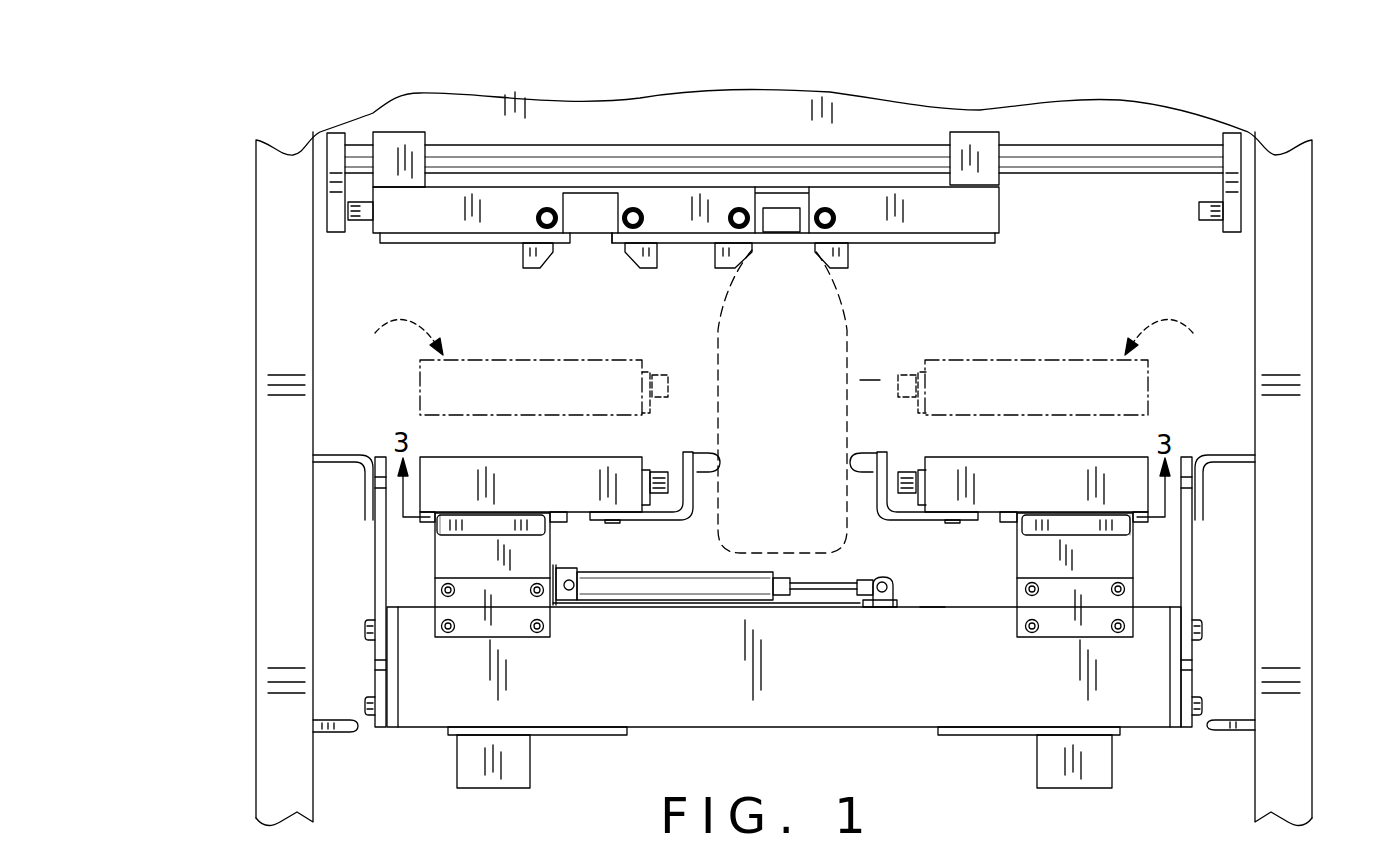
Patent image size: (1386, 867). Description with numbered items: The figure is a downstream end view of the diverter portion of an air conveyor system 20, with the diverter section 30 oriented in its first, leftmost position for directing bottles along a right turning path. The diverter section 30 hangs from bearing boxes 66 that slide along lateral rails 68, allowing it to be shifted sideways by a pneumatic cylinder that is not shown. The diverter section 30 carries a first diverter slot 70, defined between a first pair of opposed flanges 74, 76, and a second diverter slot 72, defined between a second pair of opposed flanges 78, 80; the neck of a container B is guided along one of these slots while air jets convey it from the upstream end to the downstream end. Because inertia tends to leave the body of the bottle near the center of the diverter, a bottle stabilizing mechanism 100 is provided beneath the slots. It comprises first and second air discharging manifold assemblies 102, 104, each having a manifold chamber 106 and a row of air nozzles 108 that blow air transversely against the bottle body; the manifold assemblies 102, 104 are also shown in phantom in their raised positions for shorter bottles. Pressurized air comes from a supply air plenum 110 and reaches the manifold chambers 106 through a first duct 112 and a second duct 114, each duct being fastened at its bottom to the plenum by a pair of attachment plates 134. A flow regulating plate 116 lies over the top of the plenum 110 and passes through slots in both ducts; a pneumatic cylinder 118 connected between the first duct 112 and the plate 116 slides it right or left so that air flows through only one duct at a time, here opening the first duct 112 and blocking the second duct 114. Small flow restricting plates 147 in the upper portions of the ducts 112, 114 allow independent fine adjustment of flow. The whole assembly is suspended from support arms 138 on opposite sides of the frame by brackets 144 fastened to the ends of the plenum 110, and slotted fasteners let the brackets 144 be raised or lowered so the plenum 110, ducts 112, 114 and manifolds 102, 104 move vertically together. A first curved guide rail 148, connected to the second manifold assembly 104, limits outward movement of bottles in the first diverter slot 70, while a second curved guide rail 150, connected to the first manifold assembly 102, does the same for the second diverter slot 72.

The conveyor system 20 is at (214, 315).
The diverter section 30 is at (416, 258).
The bearing boxes 66 is at (403, 148).
The lateral rails 68 is at (680, 148).
The first diverter slot 70 is at (782, 195).
The second diverter slot 72 is at (588, 205).
The flange 74 is at (752, 248).
The flange 76 is at (811, 243).
The flange 78 is at (610, 243).
The flange 80 is at (558, 243).
The bottle stabilizing mechanism 100 is at (873, 378).
The first air discharging manifold assembly 102 is at (432, 447).
The second air discharging manifold assembly 104 is at (1135, 447).
The manifold chamber 106 is at (543, 457).
The air nozzles 108 is at (658, 470).
The supply air plenum 110 is at (886, 681).
The first duct 112 is at (553, 545).
The second duct 114 is at (1017, 567).
The flow regulating plate 116 is at (932, 607).
The pneumatic cylinder 118 is at (711, 572).
The attachment plates 134 is at (510, 622).
The support arms 138 is at (345, 452).
The bracket 144 is at (373, 547).
The flow restricting plates 147 is at (492, 528).
The first curved guide rail 148 is at (868, 452).
The second curved guide rail 150 is at (708, 474).
The containers B is at (718, 400).